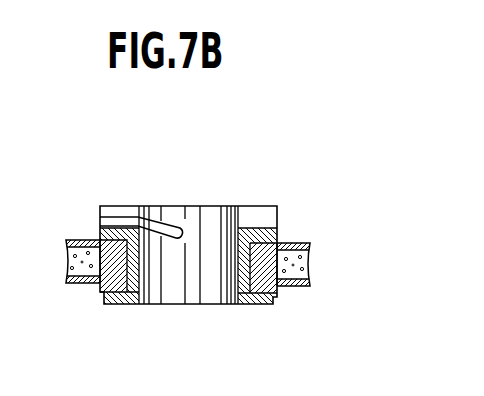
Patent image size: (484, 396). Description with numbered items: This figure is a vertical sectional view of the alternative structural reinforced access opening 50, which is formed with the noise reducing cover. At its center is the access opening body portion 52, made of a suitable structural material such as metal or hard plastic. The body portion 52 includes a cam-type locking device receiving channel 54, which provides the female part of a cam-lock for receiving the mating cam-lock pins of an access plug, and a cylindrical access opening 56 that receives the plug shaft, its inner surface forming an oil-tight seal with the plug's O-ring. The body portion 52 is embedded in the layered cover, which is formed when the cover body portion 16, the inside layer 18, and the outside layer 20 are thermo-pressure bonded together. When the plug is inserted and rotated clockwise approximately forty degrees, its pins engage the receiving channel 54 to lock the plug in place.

The structural reinforced access opening 50 is at (267, 191).
The outside layer 20 is at (292, 245).
The cover body portion 16 is at (305, 265).
The inside layer 18 is at (294, 288).
The access opening body portion 52 is at (254, 306).
The cam-type locking device receiving channel 54 is at (101, 223).
The cylindrical access opening 56 is at (142, 283).